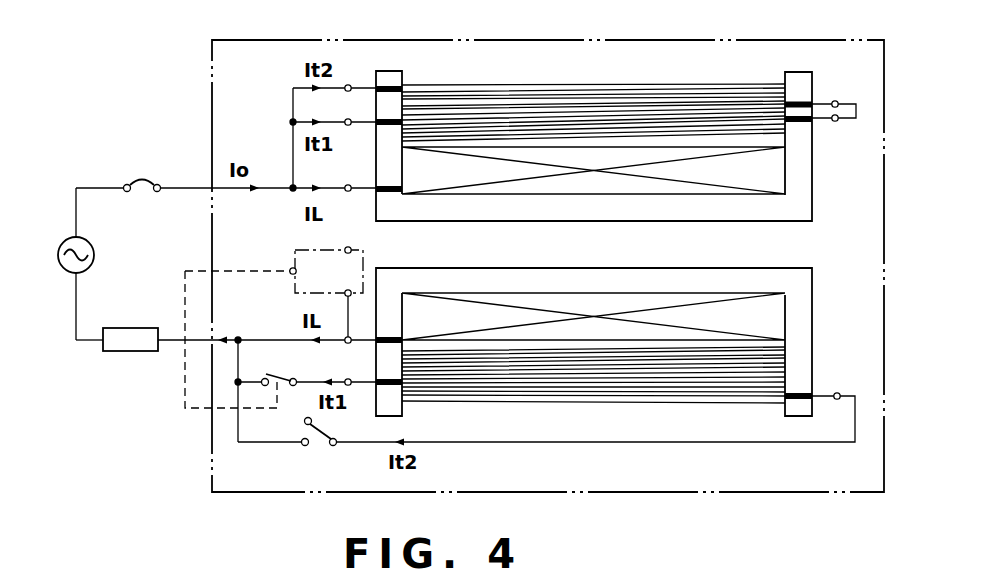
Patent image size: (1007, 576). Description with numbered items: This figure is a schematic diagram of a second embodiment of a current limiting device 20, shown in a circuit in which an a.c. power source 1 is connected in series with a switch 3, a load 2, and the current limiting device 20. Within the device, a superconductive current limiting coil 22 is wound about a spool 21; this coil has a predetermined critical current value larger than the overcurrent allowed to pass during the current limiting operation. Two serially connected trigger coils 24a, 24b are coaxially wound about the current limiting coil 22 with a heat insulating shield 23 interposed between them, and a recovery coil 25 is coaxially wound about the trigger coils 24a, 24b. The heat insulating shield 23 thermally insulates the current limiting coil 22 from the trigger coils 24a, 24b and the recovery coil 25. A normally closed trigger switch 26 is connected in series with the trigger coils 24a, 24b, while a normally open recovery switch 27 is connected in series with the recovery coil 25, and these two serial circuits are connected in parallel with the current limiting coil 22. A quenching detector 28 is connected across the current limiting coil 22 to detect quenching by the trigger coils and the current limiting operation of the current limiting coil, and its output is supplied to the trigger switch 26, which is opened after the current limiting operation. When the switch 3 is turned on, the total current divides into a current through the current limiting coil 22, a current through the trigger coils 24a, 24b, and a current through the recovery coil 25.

The a.c. power source 1 is at (95, 252).
The load 2 is at (130, 352).
The switch 3 is at (144, 176).
The current limiting device 20 is at (274, 38).
The spool 21 is at (803, 203).
The superconductive current limiting coil 22 is at (776, 312).
The heat insulating shield 23 is at (785, 133).
The trigger coil 24a is at (778, 368).
The trigger coil 24b is at (778, 382).
The recovery coil 25 is at (626, 88).
The trigger switch 26 is at (277, 377).
The recovery switch 27 is at (316, 447).
The quenching detector 28 is at (295, 250).